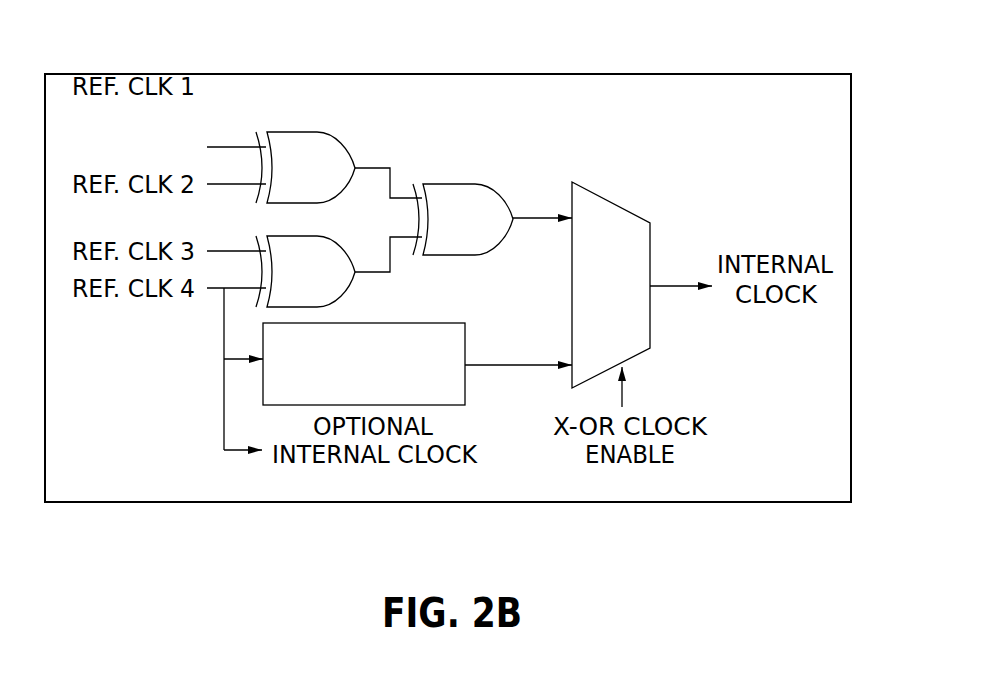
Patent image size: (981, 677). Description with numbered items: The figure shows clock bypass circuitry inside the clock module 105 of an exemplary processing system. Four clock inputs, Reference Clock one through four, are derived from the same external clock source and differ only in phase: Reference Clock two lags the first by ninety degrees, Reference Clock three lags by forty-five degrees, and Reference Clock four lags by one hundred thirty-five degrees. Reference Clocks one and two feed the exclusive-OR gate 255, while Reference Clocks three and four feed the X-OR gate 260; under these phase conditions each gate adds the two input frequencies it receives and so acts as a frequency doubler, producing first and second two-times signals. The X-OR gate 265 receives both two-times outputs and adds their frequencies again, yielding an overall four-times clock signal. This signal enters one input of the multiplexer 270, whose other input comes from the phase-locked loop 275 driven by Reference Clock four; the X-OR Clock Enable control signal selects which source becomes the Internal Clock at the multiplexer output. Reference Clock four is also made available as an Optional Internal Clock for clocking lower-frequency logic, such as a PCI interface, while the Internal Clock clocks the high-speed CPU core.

The clock module 105 is at (851, 128).
The exclusive-OR (X-OR) gate 255 is at (297, 128).
The X-OR gate 260 is at (287, 232).
The X-OR gate 265 is at (450, 180).
The multiplexer (MUX) 270 is at (607, 195).
The phase-locked loop (PLL) 275 is at (347, 322).